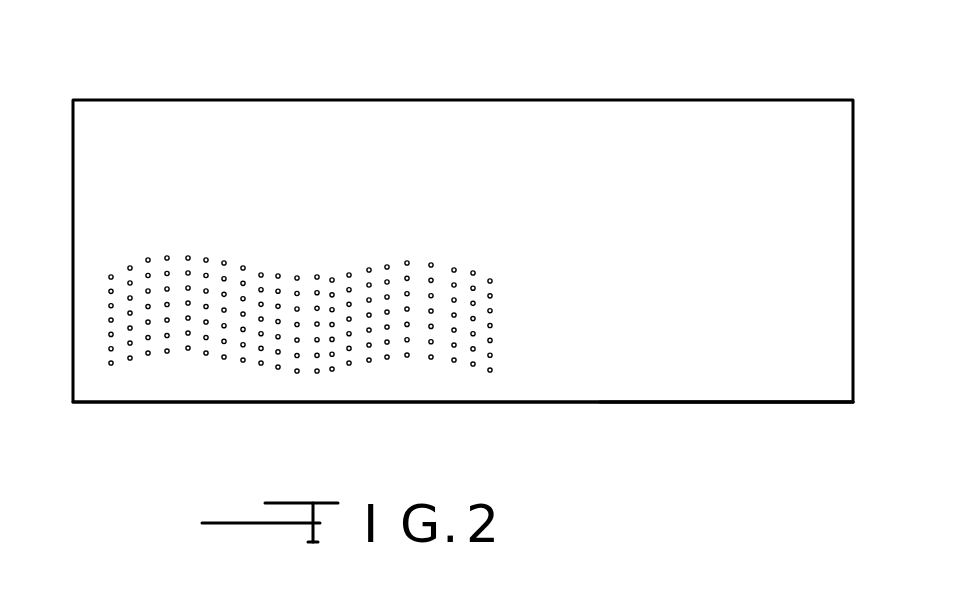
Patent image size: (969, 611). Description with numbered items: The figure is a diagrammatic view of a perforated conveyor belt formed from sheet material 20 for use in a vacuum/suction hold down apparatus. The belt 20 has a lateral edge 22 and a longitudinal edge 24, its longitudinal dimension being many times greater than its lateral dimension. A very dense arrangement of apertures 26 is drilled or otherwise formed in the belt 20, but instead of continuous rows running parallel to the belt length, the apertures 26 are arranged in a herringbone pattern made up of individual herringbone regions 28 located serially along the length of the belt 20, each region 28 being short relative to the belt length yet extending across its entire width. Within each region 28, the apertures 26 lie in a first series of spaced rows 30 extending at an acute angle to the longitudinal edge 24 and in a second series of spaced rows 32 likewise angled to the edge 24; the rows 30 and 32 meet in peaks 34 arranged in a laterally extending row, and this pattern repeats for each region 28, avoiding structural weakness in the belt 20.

The sheet material 20 is at (86, 464).
The lateral edge 22 is at (72, 118).
The longitudinal edge 24 is at (688, 402).
The apertures 26 is at (112, 274).
The herringbone regions 28 is at (243, 412).
The first series of spaced rows 30 is at (100, 304).
The second series of spaced rows 32 is at (232, 274).
The peaks 34 is at (188, 244).